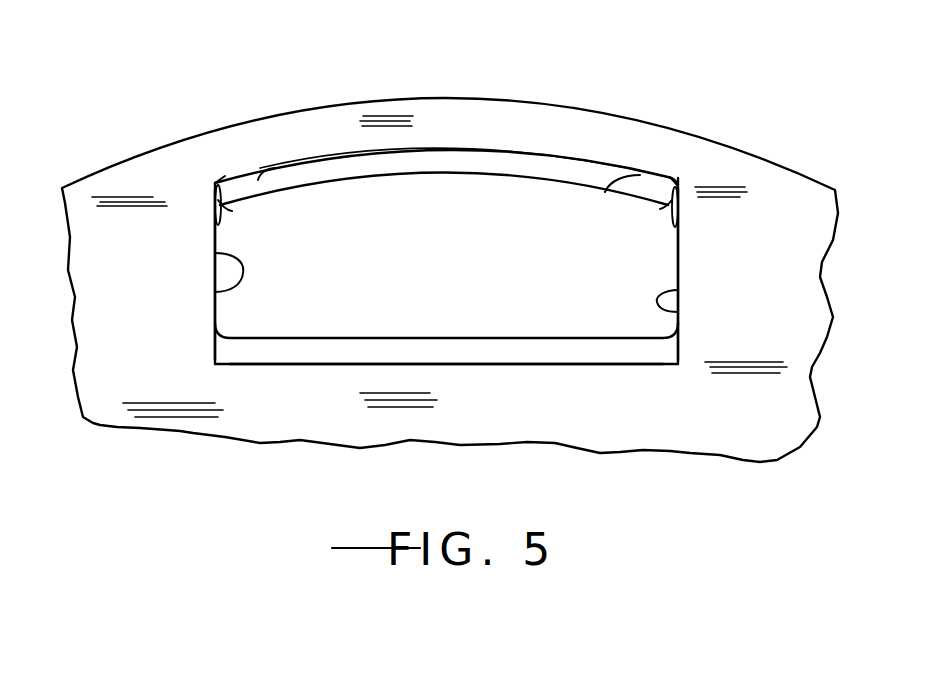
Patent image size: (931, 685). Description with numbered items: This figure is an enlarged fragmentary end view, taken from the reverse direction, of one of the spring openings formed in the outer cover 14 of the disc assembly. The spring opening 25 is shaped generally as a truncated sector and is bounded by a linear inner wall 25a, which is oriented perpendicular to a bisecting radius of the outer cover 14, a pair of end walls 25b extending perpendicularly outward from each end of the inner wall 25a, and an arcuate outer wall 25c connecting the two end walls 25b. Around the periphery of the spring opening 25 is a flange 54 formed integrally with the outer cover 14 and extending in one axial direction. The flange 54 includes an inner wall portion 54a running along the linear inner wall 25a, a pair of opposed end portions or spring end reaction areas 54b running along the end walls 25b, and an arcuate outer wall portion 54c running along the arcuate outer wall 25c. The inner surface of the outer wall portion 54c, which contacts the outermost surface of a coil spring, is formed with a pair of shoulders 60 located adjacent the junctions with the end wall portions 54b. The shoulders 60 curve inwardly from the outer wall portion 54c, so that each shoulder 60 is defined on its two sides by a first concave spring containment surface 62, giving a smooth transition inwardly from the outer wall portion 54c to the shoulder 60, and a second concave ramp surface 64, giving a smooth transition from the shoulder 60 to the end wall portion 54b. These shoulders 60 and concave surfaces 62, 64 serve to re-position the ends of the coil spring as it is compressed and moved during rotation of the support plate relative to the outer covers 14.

The outer cover 14 is at (798, 226).
The spring opening 25 is at (386, 288).
The linear inner wall 25a is at (577, 366).
The end walls 25b is at (215, 310).
The arcuate outer wall 25c is at (428, 147).
The flange 54 is at (441, 184).
The inner wall portion 54a is at (453, 350).
The end portions or spring end reaction areas 54b is at (215, 292).
The arcuate outer wall portion 54c is at (500, 162).
The shoulders 60 is at (233, 158).
The first concave spring containment surface 62 is at (276, 169).
The second concave ramp surface 64 is at (222, 207).